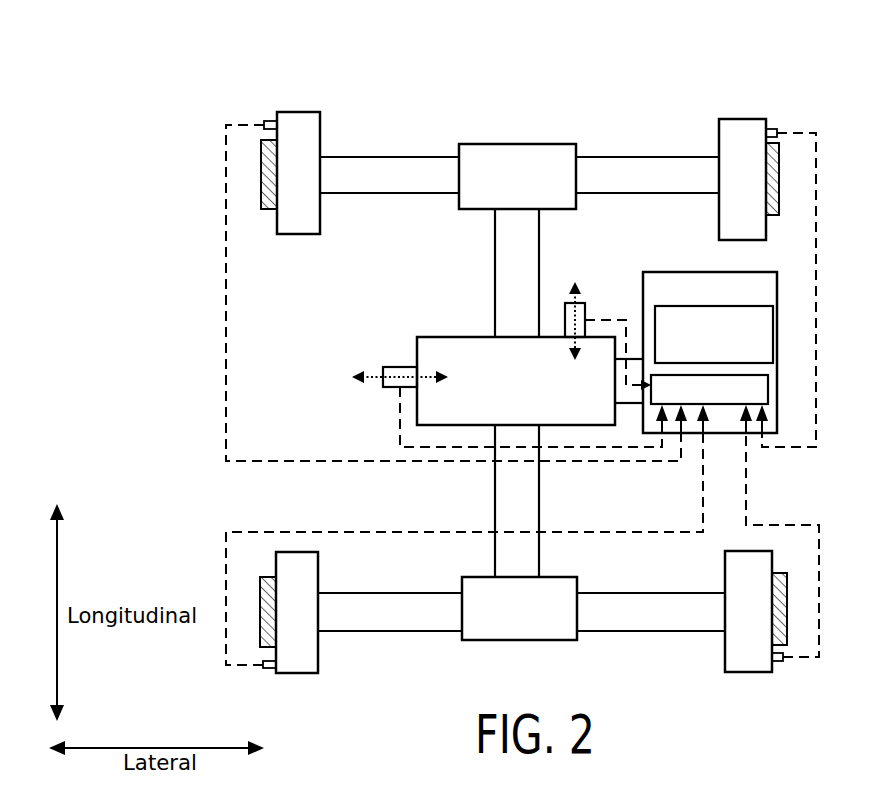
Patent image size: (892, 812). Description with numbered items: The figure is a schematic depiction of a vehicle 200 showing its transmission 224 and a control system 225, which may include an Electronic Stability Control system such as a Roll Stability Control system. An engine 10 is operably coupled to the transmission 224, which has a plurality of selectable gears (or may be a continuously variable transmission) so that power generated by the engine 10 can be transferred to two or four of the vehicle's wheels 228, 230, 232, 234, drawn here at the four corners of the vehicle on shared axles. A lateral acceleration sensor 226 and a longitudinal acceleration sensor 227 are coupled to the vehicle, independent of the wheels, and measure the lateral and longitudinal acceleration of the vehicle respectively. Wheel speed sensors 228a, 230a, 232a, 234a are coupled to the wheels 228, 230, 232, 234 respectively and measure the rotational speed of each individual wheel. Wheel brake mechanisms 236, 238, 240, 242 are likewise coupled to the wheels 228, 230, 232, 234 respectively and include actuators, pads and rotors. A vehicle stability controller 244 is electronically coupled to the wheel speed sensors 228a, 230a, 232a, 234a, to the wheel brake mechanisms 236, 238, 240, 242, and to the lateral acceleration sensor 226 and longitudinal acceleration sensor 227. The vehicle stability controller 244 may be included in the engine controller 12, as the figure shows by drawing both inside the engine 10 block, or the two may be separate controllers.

The vehicle 200 is at (497, 66).
The engine 10 is at (715, 271).
The engine controller 12 is at (769, 384).
The transmission 224 is at (461, 336).
The control system 225 is at (650, 256).
The lateral acceleration sensor 226 is at (397, 367).
The longitudinal acceleration sensor 227 is at (588, 303).
The wheel 228 is at (319, 658).
The wheel speed sensor 228a is at (268, 669).
The wheel 230 is at (724, 652).
The wheel speed sensor 230a is at (780, 662).
The wheel 232 is at (718, 140).
The wheel speed sensor 232a is at (774, 129).
The wheel 234 is at (321, 132).
The wheel speed sensor 234a is at (267, 121).
The wheel brake mechanism 236 is at (260, 595).
The wheel brake mechanism 238 is at (787, 585).
The wheel brake mechanism 240 is at (778, 205).
The wheel brake mechanism 242 is at (262, 193).
The vehicle stability controller 244 is at (774, 330).